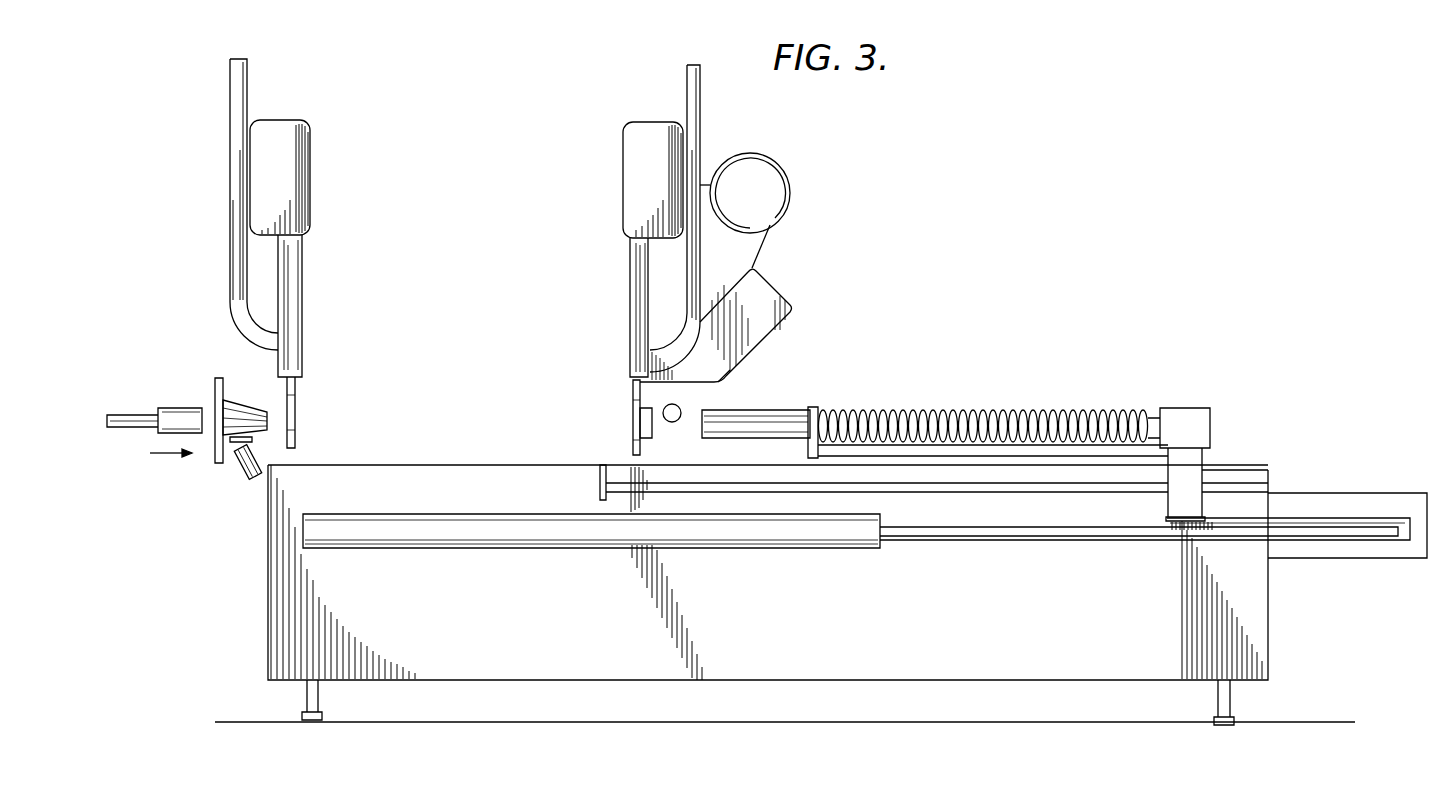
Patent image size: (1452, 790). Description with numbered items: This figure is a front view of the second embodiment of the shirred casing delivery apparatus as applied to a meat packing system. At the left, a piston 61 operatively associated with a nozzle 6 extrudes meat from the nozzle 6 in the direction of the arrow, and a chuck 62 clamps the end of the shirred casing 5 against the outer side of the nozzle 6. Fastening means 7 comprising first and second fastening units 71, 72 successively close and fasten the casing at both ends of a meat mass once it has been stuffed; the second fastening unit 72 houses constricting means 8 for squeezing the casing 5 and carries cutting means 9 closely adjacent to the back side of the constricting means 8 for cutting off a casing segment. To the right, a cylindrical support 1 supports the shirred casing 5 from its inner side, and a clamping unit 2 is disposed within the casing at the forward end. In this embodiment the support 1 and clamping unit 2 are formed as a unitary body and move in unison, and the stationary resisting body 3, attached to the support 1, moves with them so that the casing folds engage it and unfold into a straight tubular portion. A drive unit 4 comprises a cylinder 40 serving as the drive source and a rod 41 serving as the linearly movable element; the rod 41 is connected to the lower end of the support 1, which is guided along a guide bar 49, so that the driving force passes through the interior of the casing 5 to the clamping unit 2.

The support 1 is at (1148, 428).
The clamping unit 2 is at (753, 425).
The stationary resisting body 3 is at (812, 410).
The drive unit 4 is at (856, 587).
The cylinder 40 is at (830, 536).
The rod 41 is at (963, 533).
The guide bar 49 is at (1027, 486).
The shirred casing 5 is at (1020, 407).
The nozzle 6 is at (236, 426).
The piston 61 is at (182, 415).
The chuck 62 is at (238, 443).
The fastening means 7 is at (511, 257).
The first fastening unit 71 is at (297, 412).
The second fastening unit 72 is at (561, 391).
The constricting means 8 is at (637, 417).
The cutting means 9 is at (638, 390).